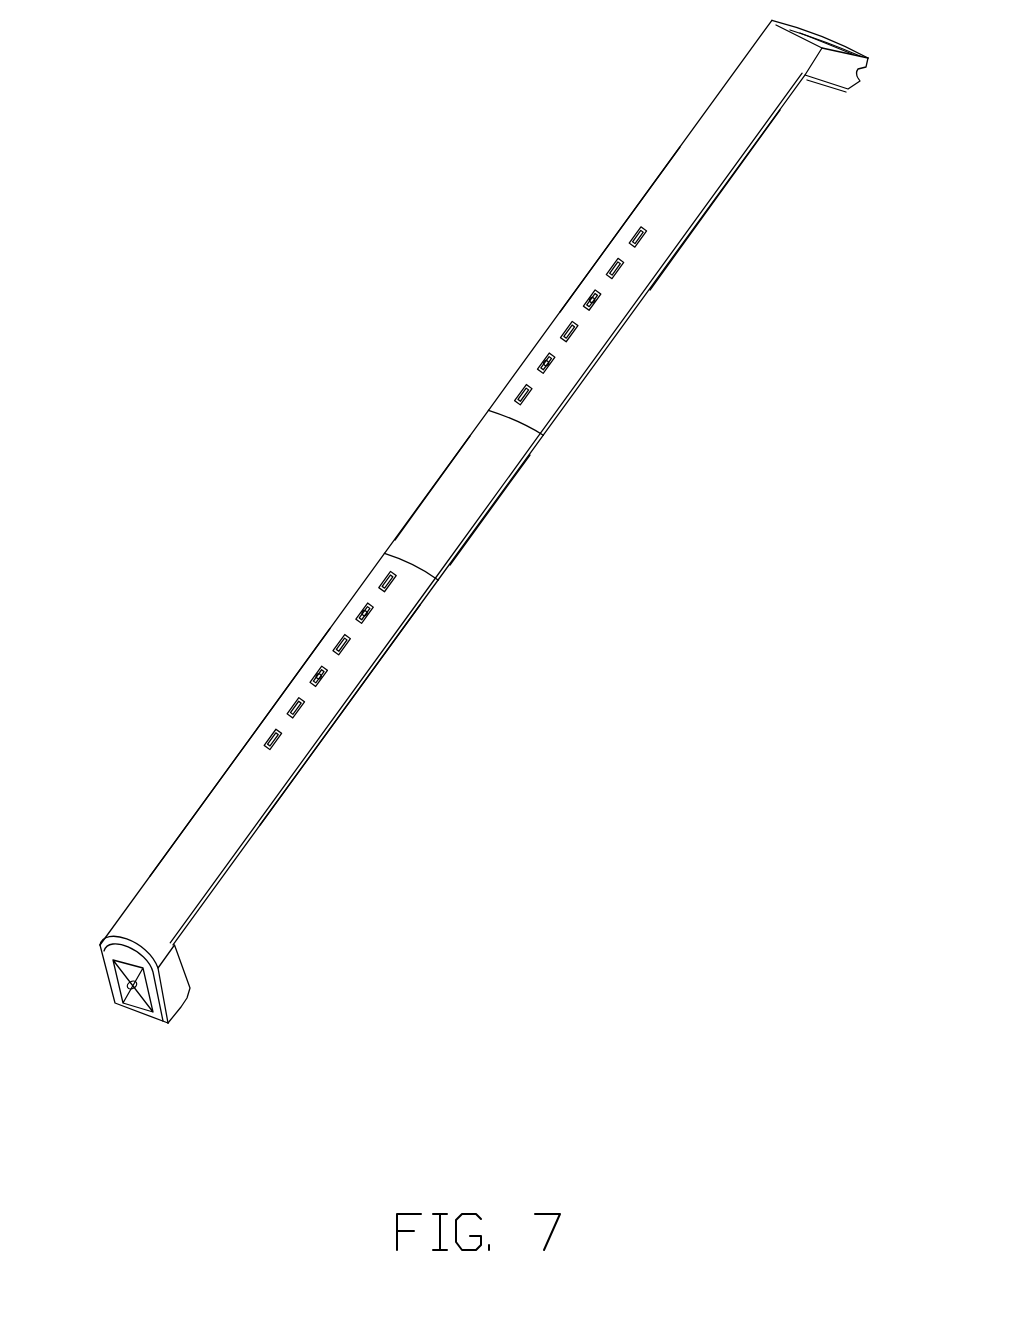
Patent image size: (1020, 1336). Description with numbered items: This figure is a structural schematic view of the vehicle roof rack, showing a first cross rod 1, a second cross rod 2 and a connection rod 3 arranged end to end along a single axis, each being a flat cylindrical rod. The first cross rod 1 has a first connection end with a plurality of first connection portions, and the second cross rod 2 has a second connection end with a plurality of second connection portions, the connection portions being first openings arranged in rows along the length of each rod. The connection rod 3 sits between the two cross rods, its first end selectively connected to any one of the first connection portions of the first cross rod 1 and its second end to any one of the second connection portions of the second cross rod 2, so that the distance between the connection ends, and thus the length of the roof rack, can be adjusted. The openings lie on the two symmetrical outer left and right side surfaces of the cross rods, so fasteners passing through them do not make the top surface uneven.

The first cross rod 1 is at (735, 143).
The second cross rod 2 is at (248, 800).
The connection rod 3 is at (468, 490).